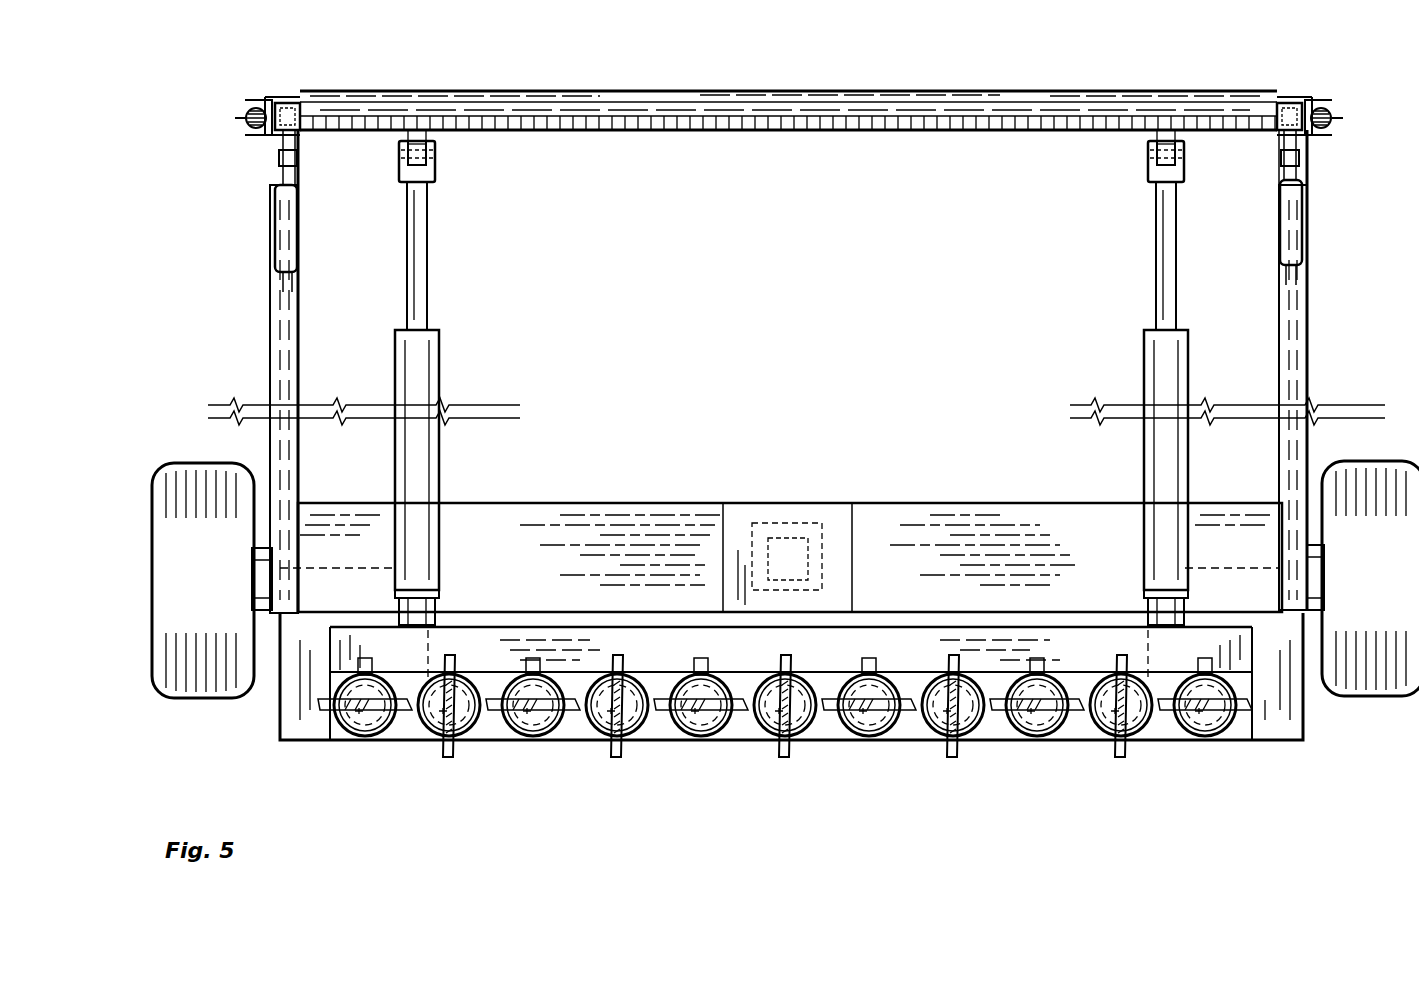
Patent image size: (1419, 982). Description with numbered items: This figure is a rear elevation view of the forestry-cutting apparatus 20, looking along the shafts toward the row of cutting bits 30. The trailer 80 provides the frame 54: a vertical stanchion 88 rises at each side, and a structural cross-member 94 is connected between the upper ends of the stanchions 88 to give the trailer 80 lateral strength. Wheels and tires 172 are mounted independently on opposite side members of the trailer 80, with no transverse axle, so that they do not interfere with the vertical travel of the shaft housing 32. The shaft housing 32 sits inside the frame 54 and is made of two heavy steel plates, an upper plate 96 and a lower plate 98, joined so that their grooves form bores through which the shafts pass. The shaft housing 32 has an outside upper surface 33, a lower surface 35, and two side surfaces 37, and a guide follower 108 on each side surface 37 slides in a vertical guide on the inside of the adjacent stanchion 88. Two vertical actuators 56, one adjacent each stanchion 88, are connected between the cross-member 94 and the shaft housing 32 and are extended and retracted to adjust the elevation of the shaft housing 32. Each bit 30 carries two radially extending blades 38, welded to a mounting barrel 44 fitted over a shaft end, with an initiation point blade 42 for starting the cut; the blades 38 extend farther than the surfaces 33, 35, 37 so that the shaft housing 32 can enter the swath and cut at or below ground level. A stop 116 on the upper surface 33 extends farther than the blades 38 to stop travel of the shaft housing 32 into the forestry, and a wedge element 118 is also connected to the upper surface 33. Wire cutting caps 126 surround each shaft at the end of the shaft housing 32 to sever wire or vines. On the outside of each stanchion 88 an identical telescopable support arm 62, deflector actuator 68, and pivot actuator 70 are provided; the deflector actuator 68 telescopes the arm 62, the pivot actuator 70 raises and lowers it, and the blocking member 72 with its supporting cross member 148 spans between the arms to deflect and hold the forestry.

The apparatus 20 is at (1132, 62).
The bit 30 is at (766, 740).
The shaft housing 32 is at (398, 738).
The upper surface 33 is at (1062, 677).
The lower surface 35 is at (1153, 742).
The side surfaces 37 is at (310, 742).
The blades 38 is at (448, 750).
The initiation point blade 42 is at (935, 700).
The mounting barrel 44 is at (540, 742).
The frame 54 is at (522, 520).
The vertical actuator 56 is at (425, 290).
The telescopable support arm 62 is at (296, 101).
The deflector actuator 68 is at (243, 118).
The pivot actuator 70 is at (280, 232).
The blocking member 72 is at (598, 131).
The trailer 80 is at (206, 432).
The vertical stanchion 88 is at (285, 332).
The cross-member 94 is at (478, 91).
The upper plate 96 is at (582, 680).
The lower plate 98 is at (652, 738).
The guide follower 108 is at (290, 735).
The stop 116 is at (690, 673).
The wedge element 118 is at (870, 656).
The wire cutting cap 126 is at (862, 740).
The cross member 148 is at (836, 113).
The wheels and tires 172 is at (206, 698).